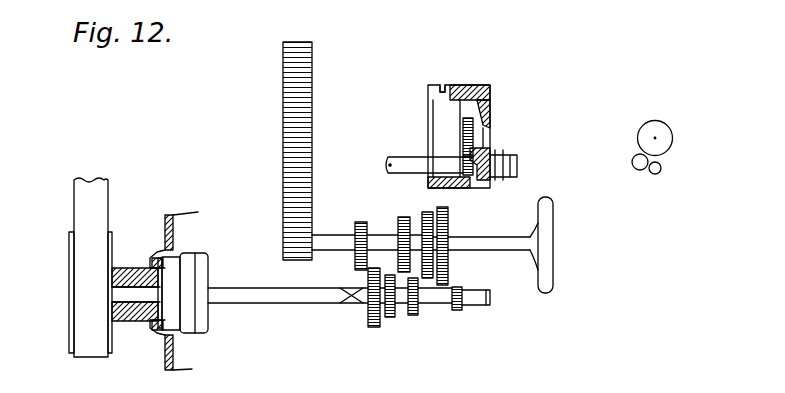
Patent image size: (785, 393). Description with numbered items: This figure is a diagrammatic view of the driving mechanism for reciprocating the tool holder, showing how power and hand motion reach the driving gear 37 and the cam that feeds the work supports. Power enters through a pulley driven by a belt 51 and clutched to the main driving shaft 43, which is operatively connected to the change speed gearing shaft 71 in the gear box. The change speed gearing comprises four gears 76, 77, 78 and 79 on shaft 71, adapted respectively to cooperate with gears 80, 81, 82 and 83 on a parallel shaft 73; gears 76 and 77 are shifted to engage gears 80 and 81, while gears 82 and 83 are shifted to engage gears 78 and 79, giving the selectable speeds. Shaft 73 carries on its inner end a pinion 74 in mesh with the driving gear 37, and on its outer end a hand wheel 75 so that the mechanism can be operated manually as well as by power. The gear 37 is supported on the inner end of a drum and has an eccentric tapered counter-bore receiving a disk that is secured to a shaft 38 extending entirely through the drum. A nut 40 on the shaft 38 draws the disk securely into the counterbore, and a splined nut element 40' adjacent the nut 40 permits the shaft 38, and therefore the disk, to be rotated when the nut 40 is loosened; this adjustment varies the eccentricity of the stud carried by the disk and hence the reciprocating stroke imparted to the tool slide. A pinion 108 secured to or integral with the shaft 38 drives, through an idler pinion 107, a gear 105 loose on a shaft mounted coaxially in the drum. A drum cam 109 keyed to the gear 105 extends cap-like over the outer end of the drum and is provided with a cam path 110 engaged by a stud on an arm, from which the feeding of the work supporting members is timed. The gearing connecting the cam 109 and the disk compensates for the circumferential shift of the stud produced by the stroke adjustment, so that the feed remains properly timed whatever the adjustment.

The driving gear 37 is at (283, 63).
The shaft 38 is at (400, 163).
The nut 40 is at (517, 150).
The splined nut element 40' is at (513, 138).
The main driving shaft 43 is at (227, 292).
The belt 51 is at (82, 193).
The change speed gearing shaft 71 is at (485, 298).
The shaft 73 is at (507, 247).
The pinion 74 is at (283, 236).
The hand wheel 75 is at (548, 262).
The gear 76 is at (374, 328).
The gear 77 is at (390, 318).
The gear 78 is at (413, 316).
The gear 79 is at (455, 311).
The gear 80 is at (362, 222).
The gear 81 is at (405, 217).
The gear 82 is at (430, 212).
The gear 83 is at (448, 220).
The gear 105 is at (465, 136).
The idler pinion 107 is at (637, 170).
The pinion 108 is at (468, 177).
The drum cam 109 is at (481, 85).
The cam path 110 is at (443, 85).